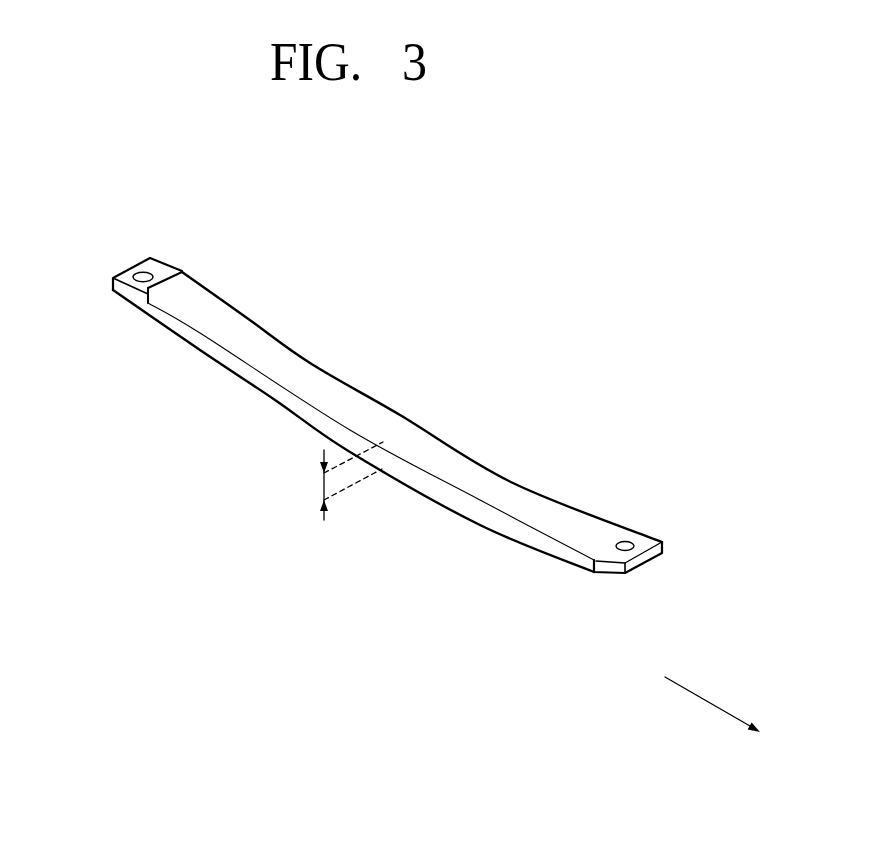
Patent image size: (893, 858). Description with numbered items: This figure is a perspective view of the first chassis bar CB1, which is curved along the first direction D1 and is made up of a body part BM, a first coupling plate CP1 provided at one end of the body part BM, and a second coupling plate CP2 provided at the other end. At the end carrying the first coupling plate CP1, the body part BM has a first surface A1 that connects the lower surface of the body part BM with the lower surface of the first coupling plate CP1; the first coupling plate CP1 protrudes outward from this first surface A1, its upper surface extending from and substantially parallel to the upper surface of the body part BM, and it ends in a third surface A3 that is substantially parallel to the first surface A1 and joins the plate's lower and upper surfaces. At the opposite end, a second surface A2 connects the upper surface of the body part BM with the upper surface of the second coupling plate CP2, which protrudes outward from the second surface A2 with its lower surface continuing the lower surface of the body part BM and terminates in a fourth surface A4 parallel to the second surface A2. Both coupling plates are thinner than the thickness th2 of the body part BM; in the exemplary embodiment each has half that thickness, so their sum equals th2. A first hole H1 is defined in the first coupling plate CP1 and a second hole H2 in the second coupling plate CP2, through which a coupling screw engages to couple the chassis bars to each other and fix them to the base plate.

The first chassis bar CB1 is at (376, 416).
The body part BM is at (372, 415).
The first coupling plate CP1 is at (648, 541).
The second coupling plate CP2 is at (150, 259).
The first hole H1 is at (626, 540).
The second hole H2 is at (133, 277).
The first surface A1 is at (603, 568).
The second surface A2 is at (175, 270).
The third surface A3 is at (648, 558).
The fourth surface A4 is at (143, 259).
The thickness of the body part th2 is at (333, 481).
The first direction D1 is at (729, 717).